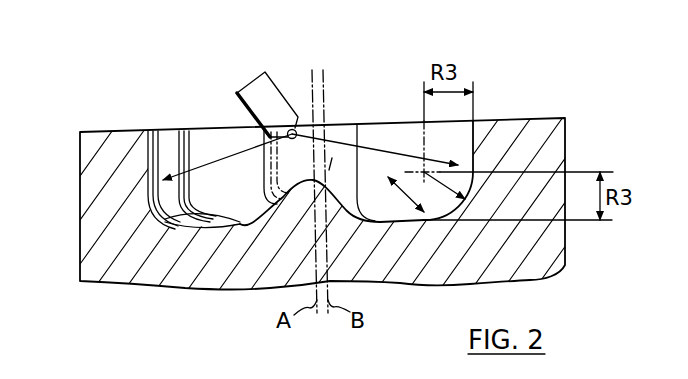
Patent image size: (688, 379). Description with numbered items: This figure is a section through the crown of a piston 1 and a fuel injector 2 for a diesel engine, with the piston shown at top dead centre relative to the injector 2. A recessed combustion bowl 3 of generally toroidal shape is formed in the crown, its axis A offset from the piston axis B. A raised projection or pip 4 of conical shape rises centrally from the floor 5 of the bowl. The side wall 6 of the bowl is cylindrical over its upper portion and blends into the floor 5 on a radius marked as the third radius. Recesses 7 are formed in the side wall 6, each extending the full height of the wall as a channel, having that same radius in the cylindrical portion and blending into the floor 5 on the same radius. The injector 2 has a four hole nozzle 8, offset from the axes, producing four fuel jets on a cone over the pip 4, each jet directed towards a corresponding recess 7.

The piston 1 is at (560, 242).
The fuel injector 2 is at (243, 90).
The recessed combustion bowl 3 is at (200, 137).
The raised projection or pip 4 is at (279, 217).
The floor of the bowl 5 is at (182, 224).
The side wall of the bowl 6 is at (207, 185).
The arcuate recesses 7 is at (160, 142).
The four hole nozzle 8 is at (297, 131).